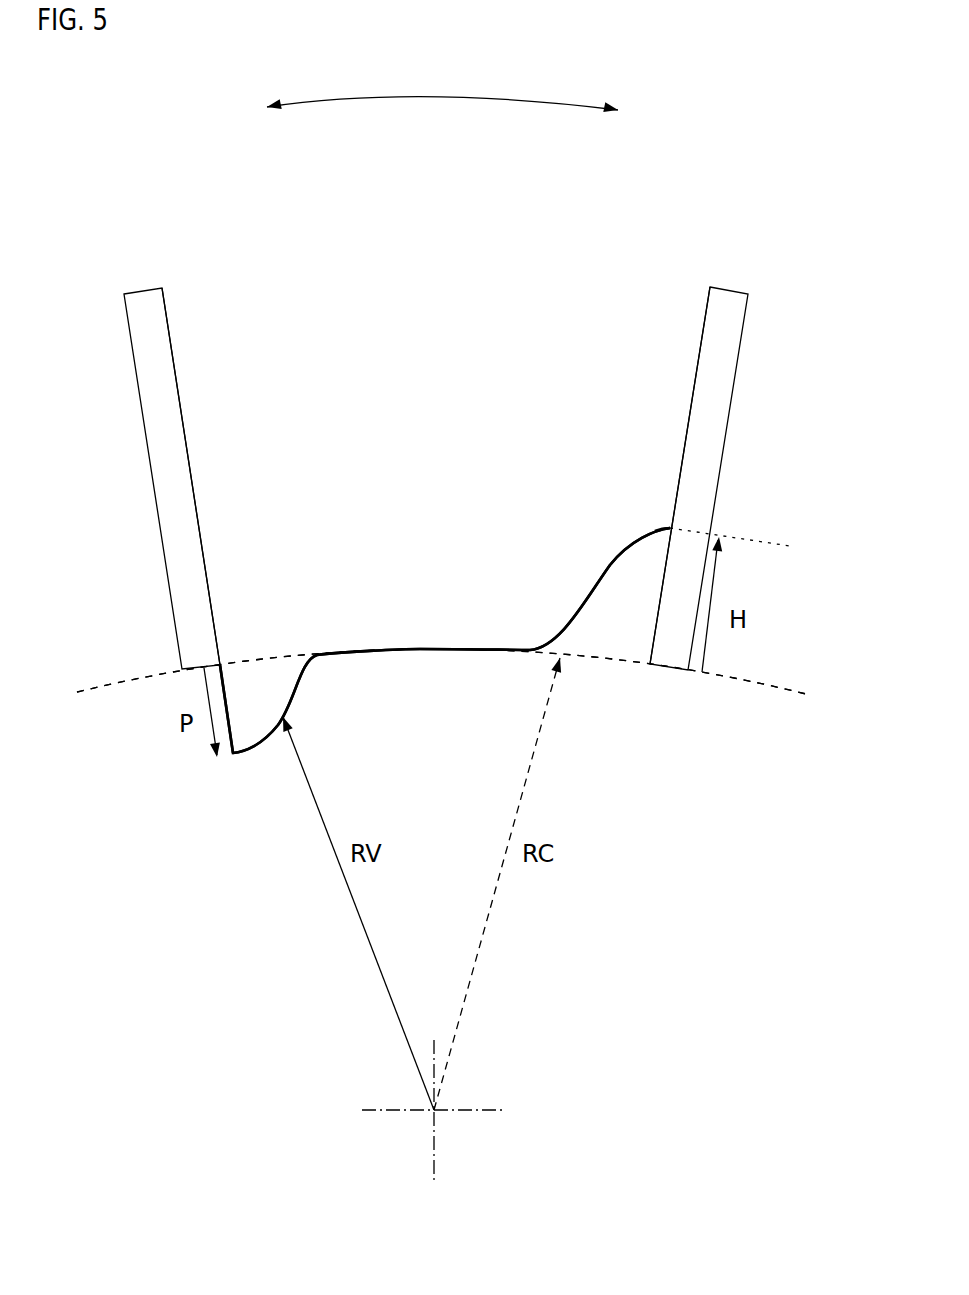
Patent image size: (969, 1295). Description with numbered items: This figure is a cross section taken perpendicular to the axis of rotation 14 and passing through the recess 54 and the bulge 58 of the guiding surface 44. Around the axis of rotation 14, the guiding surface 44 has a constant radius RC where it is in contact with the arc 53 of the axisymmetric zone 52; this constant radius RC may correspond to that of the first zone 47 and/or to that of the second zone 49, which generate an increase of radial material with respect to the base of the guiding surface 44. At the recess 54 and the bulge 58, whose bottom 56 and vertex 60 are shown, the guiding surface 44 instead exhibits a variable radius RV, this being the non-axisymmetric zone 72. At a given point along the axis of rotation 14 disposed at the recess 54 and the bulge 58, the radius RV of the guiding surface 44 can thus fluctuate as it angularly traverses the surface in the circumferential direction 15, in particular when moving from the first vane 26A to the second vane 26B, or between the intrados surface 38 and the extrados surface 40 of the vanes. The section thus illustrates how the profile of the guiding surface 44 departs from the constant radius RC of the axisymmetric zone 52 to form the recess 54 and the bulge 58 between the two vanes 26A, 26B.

The axis of rotation 14 is at (434, 1110).
The circumferential direction 15 is at (417, 98).
The first vane 26A is at (195, 320).
The second vane 26B is at (676, 332).
The intrados surface 38 is at (187, 450).
The extrados surface 40 is at (681, 465).
The guiding surface 44 is at (428, 488).
The first zone 47 is at (595, 657).
The second zone 49 is at (443, 672).
The axisymmetric zone 52 is at (521, 528).
The arc 53 is at (413, 648).
The recess 54 is at (275, 704).
The bottom 56 is at (233, 755).
The bulge 58 is at (639, 614).
The vertex 60 is at (670, 528).
The non-axisymmetric zone 72 is at (464, 544).